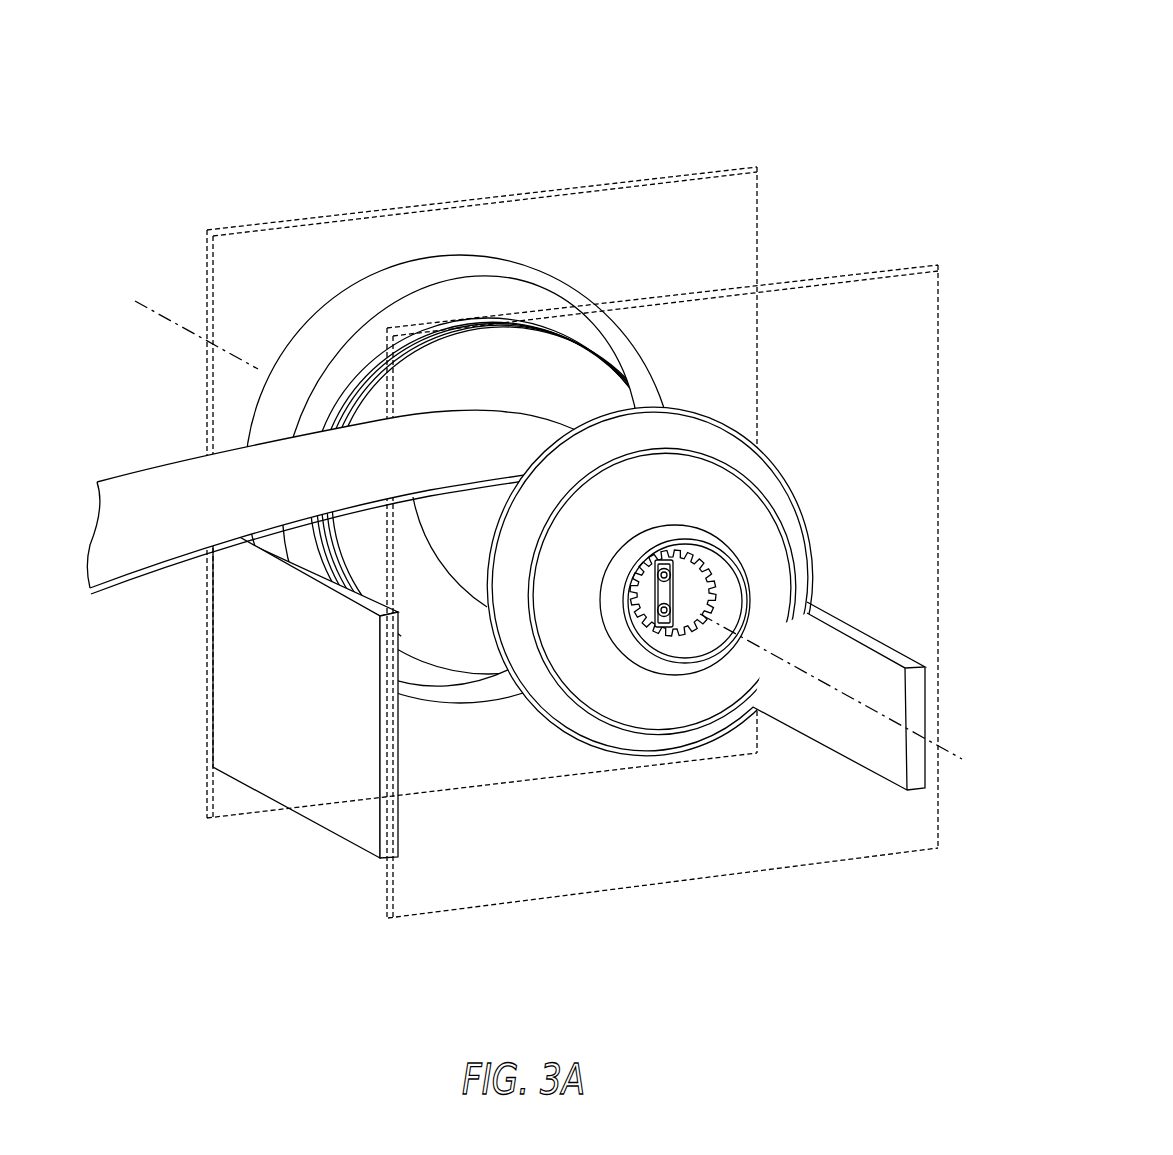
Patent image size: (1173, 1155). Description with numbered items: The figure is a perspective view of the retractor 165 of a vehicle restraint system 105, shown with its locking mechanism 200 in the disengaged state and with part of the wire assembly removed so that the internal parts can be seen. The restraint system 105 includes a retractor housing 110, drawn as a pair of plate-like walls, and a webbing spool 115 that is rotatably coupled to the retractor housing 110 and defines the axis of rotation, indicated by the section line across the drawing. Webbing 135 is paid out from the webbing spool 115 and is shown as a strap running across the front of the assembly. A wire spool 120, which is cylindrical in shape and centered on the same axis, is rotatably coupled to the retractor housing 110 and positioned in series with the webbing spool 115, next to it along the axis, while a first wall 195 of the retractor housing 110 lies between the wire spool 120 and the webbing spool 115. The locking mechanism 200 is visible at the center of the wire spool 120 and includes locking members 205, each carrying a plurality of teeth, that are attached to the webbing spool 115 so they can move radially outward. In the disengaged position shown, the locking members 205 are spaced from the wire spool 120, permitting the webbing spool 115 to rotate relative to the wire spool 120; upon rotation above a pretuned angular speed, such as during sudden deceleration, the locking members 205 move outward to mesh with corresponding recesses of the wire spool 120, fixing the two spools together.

The restraint system 105 is at (821, 69).
The retractor housing 110 is at (650, 172).
The retractor 165 is at (435, 194).
The first wall 195 is at (847, 272).
The webbing 135 is at (168, 463).
The wire spool 120 is at (757, 484).
The locking member 205 is at (673, 578).
The locking mechanism 200 is at (693, 640).
The webbing spool 115 is at (552, 734).